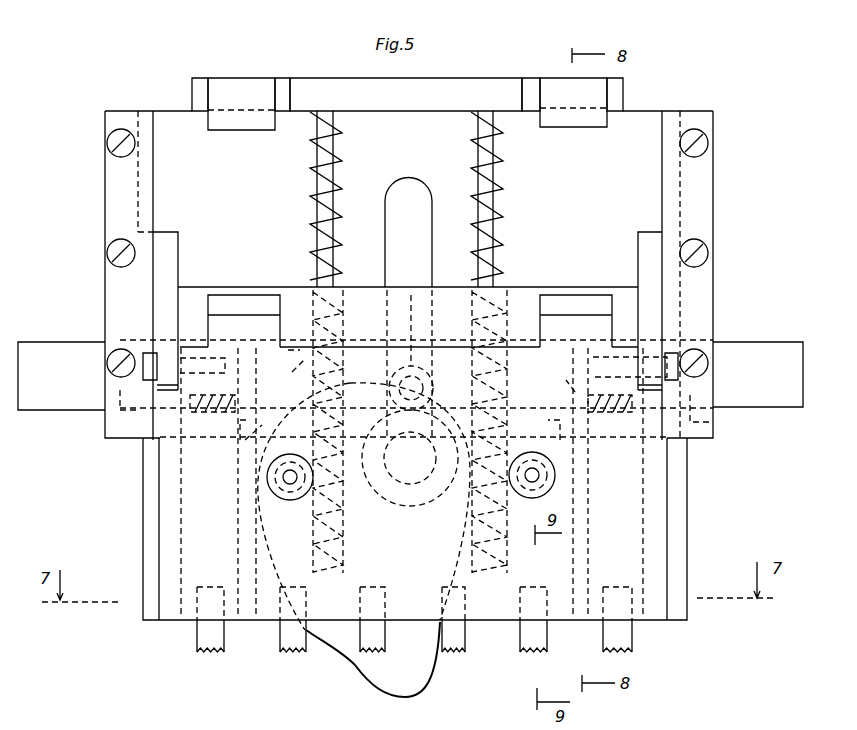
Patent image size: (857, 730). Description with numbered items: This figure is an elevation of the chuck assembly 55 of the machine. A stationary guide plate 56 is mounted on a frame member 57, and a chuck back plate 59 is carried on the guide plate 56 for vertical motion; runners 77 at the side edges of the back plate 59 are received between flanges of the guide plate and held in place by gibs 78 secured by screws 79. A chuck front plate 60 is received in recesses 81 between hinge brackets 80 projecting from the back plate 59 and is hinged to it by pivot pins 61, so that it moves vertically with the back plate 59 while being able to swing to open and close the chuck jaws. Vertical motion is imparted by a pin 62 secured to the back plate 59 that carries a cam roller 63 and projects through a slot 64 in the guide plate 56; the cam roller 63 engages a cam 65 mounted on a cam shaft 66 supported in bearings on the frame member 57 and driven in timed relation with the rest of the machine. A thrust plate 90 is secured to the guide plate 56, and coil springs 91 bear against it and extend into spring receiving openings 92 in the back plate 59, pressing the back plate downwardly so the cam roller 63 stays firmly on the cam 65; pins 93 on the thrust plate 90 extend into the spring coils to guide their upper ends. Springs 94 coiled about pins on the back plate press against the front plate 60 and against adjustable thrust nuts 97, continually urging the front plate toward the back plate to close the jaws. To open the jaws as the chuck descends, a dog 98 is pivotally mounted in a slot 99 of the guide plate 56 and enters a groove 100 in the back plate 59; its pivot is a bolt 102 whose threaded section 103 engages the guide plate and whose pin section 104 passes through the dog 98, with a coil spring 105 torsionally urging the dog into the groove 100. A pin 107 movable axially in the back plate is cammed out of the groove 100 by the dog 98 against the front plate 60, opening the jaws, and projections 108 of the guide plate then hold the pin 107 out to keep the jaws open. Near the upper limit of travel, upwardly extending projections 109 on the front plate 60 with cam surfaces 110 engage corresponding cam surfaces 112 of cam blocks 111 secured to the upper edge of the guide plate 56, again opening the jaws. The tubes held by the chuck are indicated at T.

The chuck assembly 55 is at (722, 206).
The stationary guide plate 56 is at (646, 119).
The frame member 57 is at (768, 340).
The chuck back plate 59 is at (524, 288).
The chuck front plate 60 is at (672, 512).
The pivot pins 61 is at (630, 328).
The pin 62 is at (415, 388).
The cam roller 63 is at (404, 330).
The slot 64 is at (385, 248).
The cam 65 is at (345, 655).
The cam shaft 66 is at (407, 500).
The runners 77 is at (168, 242).
The gibs 78 is at (108, 200).
The screws 79 is at (106, 144).
The hinge brackets 80 is at (165, 345).
The recesses 81 is at (165, 390).
The thrust plate 90 is at (482, 78).
The coil springs 91 is at (312, 198).
The spring receiving openings 92 is at (312, 368).
The pins 93 is at (335, 165).
The springs 94 is at (288, 480).
The adjustable thrust nuts 97 is at (292, 500).
The dog 98 is at (292, 372).
The slot 99 is at (279, 357).
The groove 100 is at (237, 512).
The bolt 102 is at (105, 430).
The threaded section 103 is at (713, 422).
The pin section 104 is at (423, 398).
The coil spring 105 is at (411, 393).
The pin 107 is at (245, 440).
The projections 108 is at (330, 506).
The upwardly extending projections 109 is at (268, 322).
The cam surfaces 110 is at (220, 300).
The cam blocks 111 is at (200, 90).
The cam surfaces 112 is at (238, 130).
The tab T is at (197, 642).